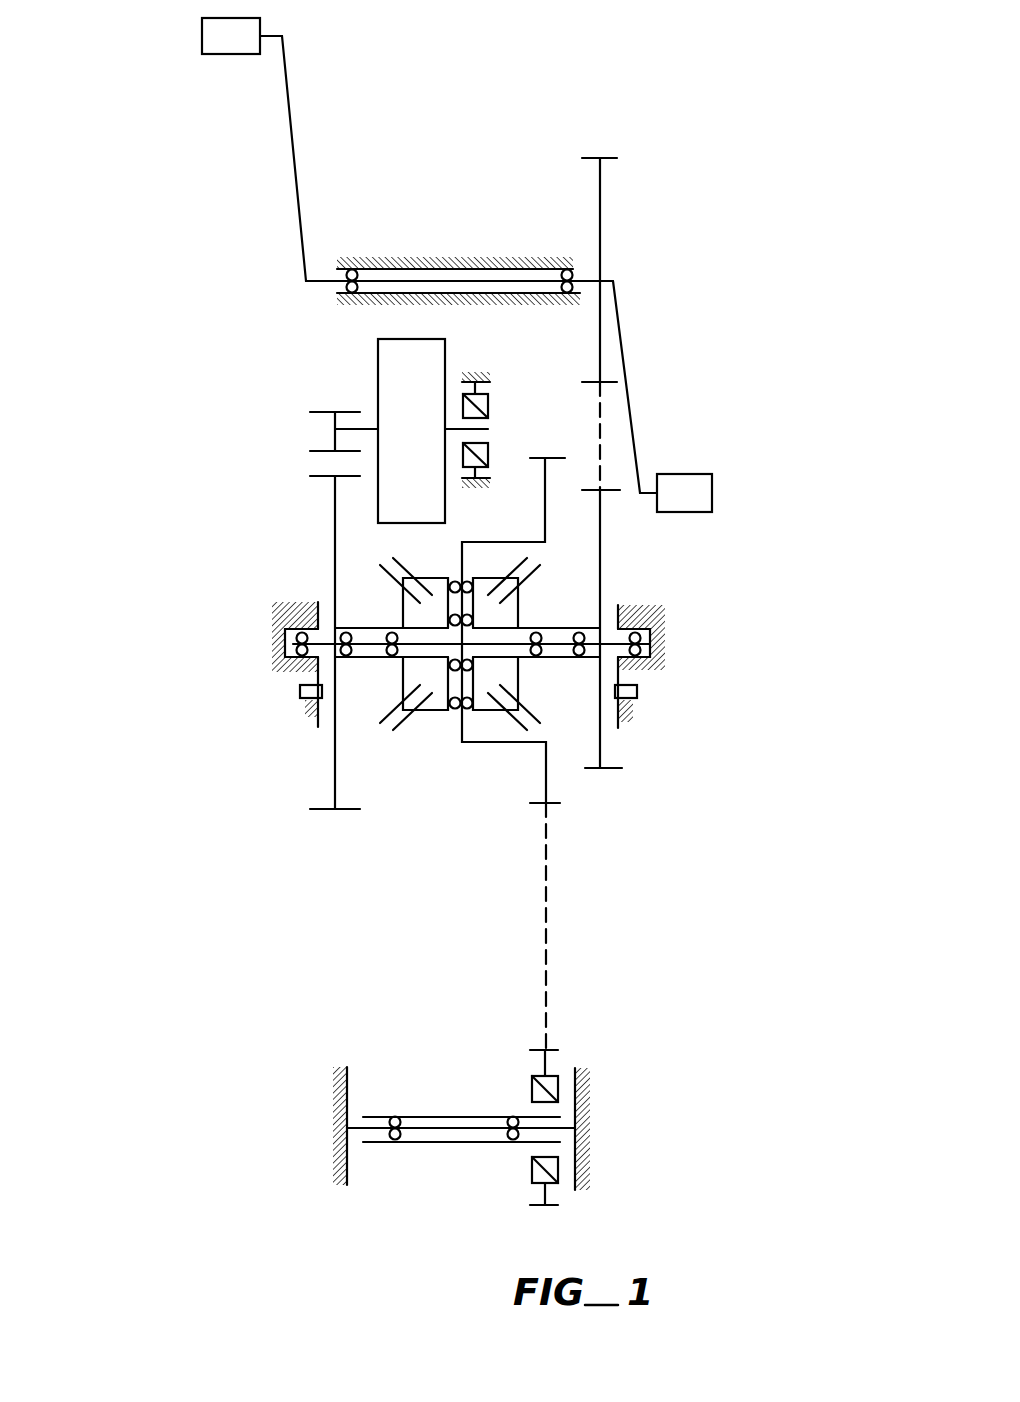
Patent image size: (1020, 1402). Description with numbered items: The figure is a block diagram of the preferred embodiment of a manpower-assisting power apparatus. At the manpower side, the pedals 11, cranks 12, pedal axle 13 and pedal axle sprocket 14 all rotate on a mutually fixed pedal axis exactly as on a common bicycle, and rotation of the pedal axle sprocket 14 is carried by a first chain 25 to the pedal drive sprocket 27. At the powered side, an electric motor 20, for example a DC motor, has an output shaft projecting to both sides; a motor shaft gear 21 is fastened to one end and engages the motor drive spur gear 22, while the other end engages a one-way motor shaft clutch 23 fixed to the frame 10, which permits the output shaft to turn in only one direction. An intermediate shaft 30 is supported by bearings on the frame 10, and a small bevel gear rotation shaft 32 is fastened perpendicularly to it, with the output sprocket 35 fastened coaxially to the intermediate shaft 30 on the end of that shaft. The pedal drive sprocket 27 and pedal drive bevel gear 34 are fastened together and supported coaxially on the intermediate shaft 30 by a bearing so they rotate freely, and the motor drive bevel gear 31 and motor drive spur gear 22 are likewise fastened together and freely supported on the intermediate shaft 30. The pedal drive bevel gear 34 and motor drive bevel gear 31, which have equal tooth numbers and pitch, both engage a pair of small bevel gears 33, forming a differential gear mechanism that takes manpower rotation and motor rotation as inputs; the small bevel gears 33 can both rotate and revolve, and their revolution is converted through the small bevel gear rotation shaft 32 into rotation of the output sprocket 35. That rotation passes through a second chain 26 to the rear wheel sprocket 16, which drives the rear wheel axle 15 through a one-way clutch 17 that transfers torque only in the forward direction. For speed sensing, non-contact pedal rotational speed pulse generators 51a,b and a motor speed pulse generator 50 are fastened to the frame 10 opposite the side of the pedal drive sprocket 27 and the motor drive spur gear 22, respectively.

The frame 10 is at (580, 264).
The pedals 11 is at (202, 36).
The cranks 12 is at (628, 337).
The pedal axle 13 is at (318, 280).
The pedal axle sprocket 14 is at (605, 158).
The rear wheel axle 15 is at (445, 1115).
The rear wheel sprocket 16 is at (558, 1052).
The one-way clutch 17 is at (532, 1095).
The electric motor 20 is at (383, 372).
The motor shaft gear 21 is at (322, 410).
The motor drive spur gear 22 is at (325, 812).
The one-way motor shaft clutch 23 is at (485, 398).
The first chain 25 is at (605, 418).
The second chain 26 is at (546, 932).
The pedal drive sprocket 27 is at (613, 763).
The intermediate shaft 30 is at (418, 642).
The motor drive bevel gear 31 is at (388, 572).
The small bevel gear rotation shaft 32 is at (460, 733).
The small bevel gears 33 is at (398, 567).
The pedal drive bevel gear 34 is at (543, 568).
The output sprocket 35 is at (553, 803).
The motor speed pulse generator 50 is at (300, 692).
The pedal rotational speed pulse generators 51a,b is at (637, 692).